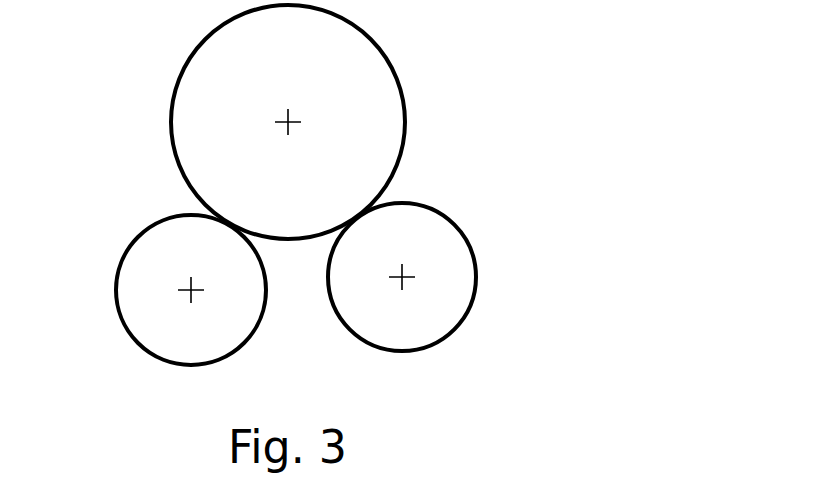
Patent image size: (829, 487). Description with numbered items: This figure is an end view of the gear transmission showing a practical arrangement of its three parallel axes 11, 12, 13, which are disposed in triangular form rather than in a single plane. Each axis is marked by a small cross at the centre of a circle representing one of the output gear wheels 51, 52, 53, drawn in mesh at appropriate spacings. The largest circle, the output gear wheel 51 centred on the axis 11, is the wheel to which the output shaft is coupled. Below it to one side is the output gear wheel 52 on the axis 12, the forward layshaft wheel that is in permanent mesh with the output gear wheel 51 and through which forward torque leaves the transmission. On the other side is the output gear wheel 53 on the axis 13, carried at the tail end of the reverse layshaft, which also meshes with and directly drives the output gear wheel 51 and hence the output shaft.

The axis 11 is at (274, 118).
The axis 12 is at (183, 300).
The axis 13 is at (412, 268).
The output gear wheel 51 is at (390, 118).
The output gear wheel 52 is at (132, 307).
The output gear wheel 53 is at (458, 280).